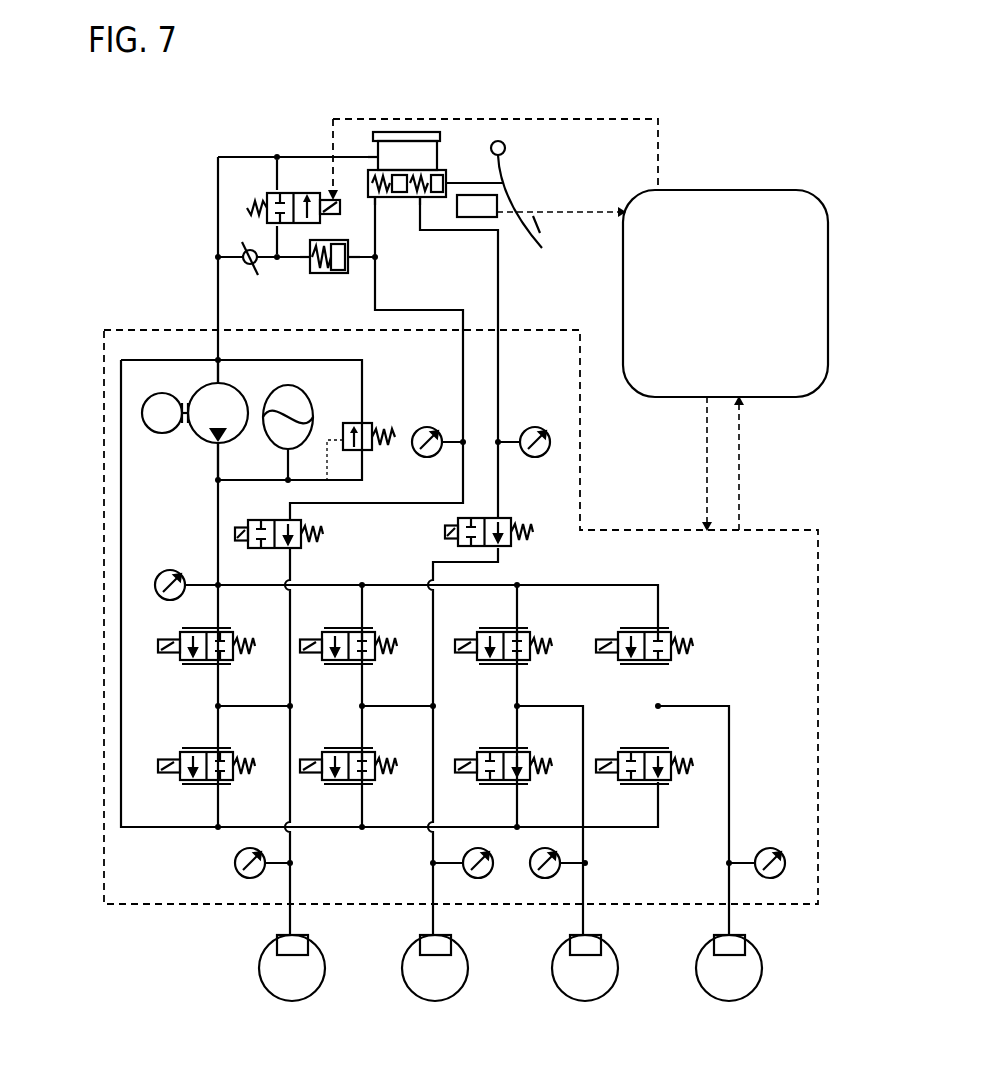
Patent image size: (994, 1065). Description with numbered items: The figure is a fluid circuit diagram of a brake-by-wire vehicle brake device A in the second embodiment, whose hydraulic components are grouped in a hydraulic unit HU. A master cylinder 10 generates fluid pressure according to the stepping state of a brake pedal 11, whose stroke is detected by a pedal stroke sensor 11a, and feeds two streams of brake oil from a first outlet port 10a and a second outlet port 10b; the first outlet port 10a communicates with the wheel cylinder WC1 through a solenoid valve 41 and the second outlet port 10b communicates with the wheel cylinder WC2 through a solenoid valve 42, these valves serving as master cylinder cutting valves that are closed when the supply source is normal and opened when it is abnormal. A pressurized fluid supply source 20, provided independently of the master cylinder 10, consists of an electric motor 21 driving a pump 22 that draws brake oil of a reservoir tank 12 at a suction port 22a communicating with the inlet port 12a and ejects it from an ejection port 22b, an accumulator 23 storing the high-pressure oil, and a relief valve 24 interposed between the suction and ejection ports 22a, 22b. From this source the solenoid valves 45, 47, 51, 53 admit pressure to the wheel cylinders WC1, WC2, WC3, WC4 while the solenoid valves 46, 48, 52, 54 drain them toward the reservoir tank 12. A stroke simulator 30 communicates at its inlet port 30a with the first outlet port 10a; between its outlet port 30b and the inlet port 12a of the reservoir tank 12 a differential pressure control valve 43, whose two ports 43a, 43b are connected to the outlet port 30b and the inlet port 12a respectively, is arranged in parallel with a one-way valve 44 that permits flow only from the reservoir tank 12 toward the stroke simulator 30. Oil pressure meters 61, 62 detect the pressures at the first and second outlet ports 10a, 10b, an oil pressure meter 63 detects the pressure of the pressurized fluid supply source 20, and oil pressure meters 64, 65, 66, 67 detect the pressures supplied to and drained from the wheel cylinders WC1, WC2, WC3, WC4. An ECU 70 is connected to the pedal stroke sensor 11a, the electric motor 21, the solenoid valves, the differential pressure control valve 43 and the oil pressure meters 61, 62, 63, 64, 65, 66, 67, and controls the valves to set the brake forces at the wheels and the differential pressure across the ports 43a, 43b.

The master cylinder 10 is at (443, 168).
The first outlet port 10a is at (375, 198).
The second outlet port 10b is at (418, 198).
The brake pedal 11 is at (508, 190).
The pedal stroke sensor 11a is at (465, 217).
The reservoir tank 12 is at (403, 137).
The inlet port 12a is at (377, 153).
The pressurized fluid supply source 20 is at (171, 453).
The electric motor 21 is at (145, 401).
The pump 22 is at (228, 397).
The suction port 22a is at (213, 380).
The ejection port 22b is at (212, 446).
The accumulator 23 is at (300, 402).
The relief valve 24 is at (367, 423).
The stroke simulator 30 is at (331, 278).
The inlet port 30a is at (350, 259).
The outlet port 30b is at (308, 258).
The solenoid valve 41 is at (283, 520).
The solenoid valve 42 is at (507, 518).
The differential pressure control valve 43 is at (290, 190).
The port 43a is at (267, 232).
The port 43b is at (277, 188).
The one-way valve 44 is at (243, 253).
The solenoid valve 45 is at (228, 628).
The solenoid valve 46 is at (193, 750).
The solenoid valve 47 is at (368, 628).
The solenoid valve 48 is at (345, 750).
The solenoid valve 51 is at (522, 628).
The solenoid valve 52 is at (497, 750).
The solenoid valve 53 is at (666, 628).
The solenoid valve 54 is at (642, 750).
The oil pressure meter 61 is at (428, 426).
The oil pressure meter 62 is at (535, 426).
The oil pressure meter 63 is at (172, 570).
The oil pressure meter 64 is at (234, 866).
The oil pressure meter 65 is at (482, 850).
The oil pressure meter 66 is at (540, 877).
The oil pressure meter 67 is at (770, 847).
The ECU 70 is at (770, 190).
The vehicle brake device A is at (633, 62).
The hydraulic unit HU is at (461, 592).
The wheel cylinder WC1 is at (283, 940).
The wheel cylinder WC2 is at (426, 940).
The wheel cylinder WC3 is at (580, 940).
The wheel cylinder WC4 is at (720, 940).